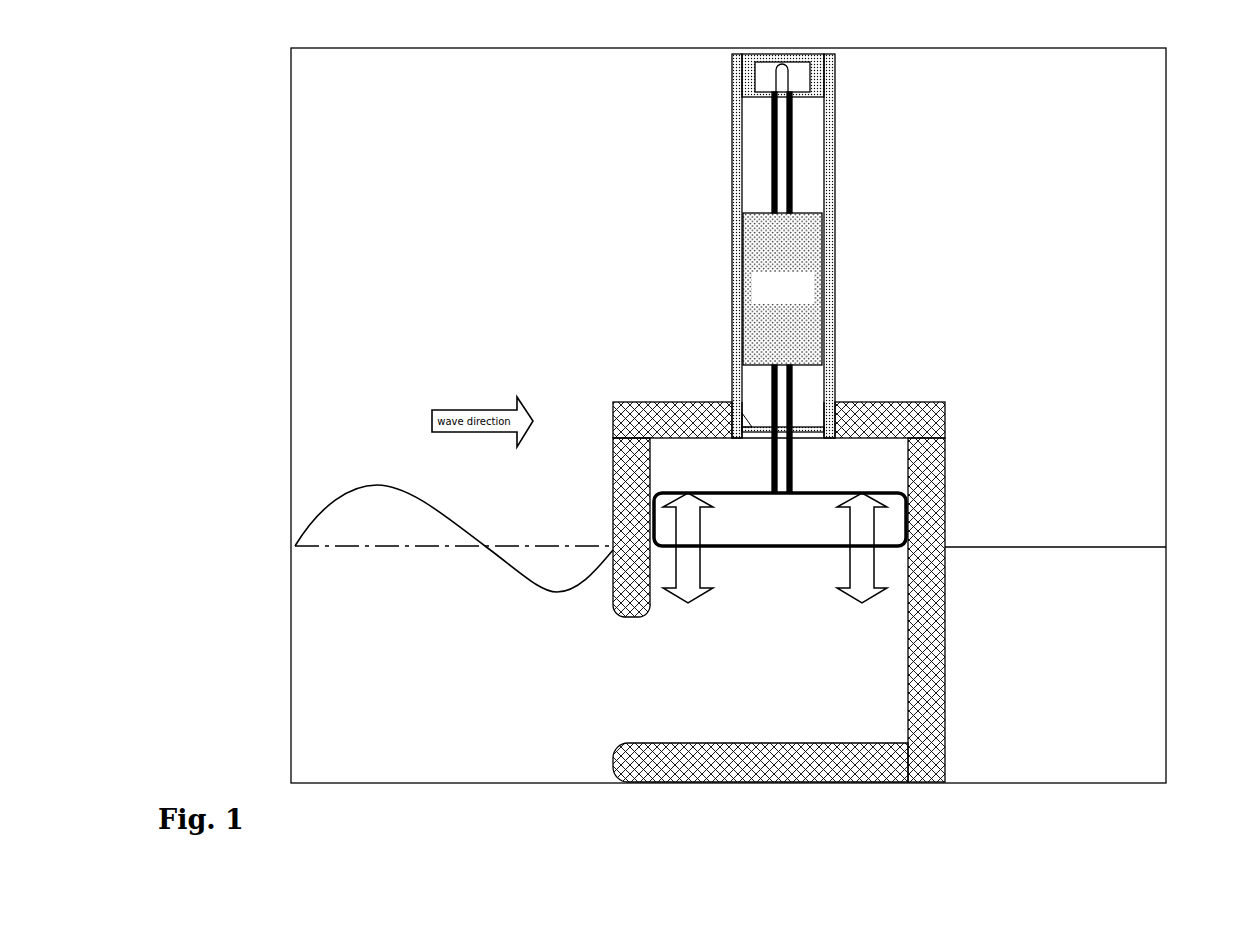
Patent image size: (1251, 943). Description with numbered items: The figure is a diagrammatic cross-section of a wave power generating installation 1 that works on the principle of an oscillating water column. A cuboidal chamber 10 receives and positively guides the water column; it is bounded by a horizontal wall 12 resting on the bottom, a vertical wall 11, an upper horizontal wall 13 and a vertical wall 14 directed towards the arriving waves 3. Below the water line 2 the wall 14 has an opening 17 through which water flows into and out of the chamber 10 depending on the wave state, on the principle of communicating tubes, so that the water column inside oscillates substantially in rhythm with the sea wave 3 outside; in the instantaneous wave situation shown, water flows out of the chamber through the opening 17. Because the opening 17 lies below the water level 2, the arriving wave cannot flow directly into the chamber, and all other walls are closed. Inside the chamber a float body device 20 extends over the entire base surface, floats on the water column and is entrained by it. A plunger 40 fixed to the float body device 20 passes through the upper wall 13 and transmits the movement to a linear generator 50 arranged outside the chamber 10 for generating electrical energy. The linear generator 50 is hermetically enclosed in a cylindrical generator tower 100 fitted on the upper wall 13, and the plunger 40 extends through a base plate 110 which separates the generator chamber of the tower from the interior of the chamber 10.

The wave energy conversion apparatus 1 is at (1072, 91).
The water line 2 is at (995, 546).
The wave 3 is at (377, 484).
The chamber 10 is at (784, 690).
The vertical wall 11 is at (944, 472).
The horizontal wall 12 is at (843, 760).
The upper horizontal wall 13 is at (880, 404).
The vertical wall 14 is at (612, 462).
The opening 17 is at (630, 670).
The float body device 20 is at (913, 535).
The plunger 40 is at (797, 380).
The linear generator 50 is at (805, 258).
The generator tower 100 is at (836, 160).
The base plate 110 is at (733, 400).